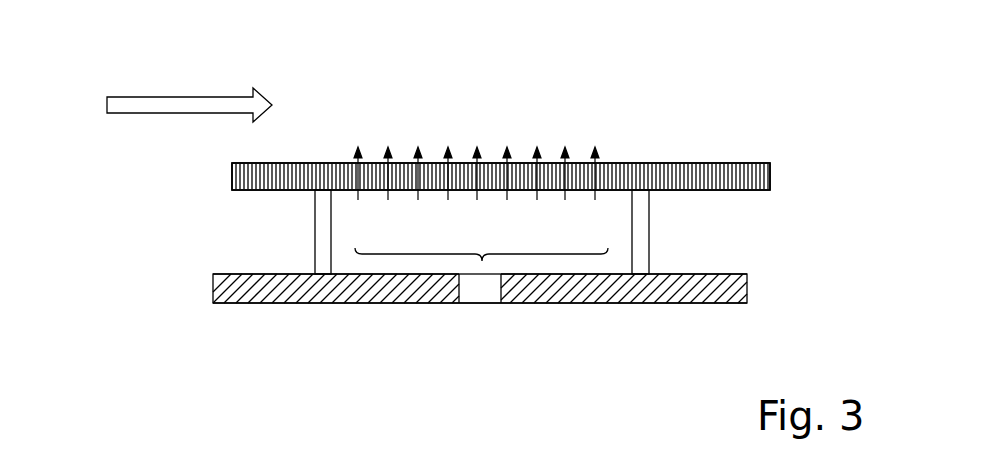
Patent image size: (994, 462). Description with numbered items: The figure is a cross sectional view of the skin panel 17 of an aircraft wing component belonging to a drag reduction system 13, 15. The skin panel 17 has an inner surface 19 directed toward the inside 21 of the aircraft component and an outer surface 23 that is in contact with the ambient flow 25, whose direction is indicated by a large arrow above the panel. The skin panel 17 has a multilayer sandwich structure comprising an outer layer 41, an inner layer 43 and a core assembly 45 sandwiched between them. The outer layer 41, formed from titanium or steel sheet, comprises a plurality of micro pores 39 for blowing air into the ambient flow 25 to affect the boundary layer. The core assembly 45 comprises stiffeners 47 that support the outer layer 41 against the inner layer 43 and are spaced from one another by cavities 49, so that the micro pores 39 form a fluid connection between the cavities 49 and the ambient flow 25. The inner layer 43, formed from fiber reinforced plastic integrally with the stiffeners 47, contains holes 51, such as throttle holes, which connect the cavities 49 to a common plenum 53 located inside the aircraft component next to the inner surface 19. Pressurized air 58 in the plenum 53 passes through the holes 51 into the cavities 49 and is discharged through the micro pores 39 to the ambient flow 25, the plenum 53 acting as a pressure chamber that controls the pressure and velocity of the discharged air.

The drag reduction system 13 is at (788, 183).
The heating element 15 is at (577, 188).
The skin panel 17 is at (136, 158).
The inner surface 19 is at (722, 304).
The inside 21 is at (395, 371).
The outer surface 23 is at (722, 168).
The ambient flow 25 is at (181, 105).
The micro pores 39 is at (720, 186).
The outer layer 41 is at (232, 176).
The inner layer 43 is at (228, 288).
The core assembly 45 is at (298, 237).
The stiffeners 47 is at (315, 205).
The cavities 49 is at (422, 244).
The holes 51 is at (498, 262).
The common plenum 53 is at (595, 371).
The pressurized air 58 is at (598, 158).